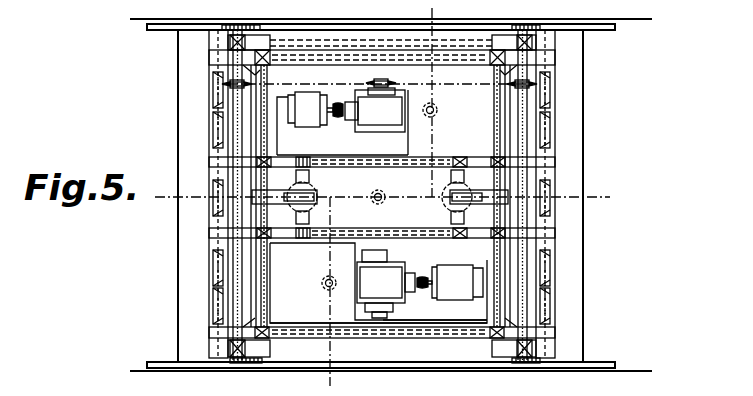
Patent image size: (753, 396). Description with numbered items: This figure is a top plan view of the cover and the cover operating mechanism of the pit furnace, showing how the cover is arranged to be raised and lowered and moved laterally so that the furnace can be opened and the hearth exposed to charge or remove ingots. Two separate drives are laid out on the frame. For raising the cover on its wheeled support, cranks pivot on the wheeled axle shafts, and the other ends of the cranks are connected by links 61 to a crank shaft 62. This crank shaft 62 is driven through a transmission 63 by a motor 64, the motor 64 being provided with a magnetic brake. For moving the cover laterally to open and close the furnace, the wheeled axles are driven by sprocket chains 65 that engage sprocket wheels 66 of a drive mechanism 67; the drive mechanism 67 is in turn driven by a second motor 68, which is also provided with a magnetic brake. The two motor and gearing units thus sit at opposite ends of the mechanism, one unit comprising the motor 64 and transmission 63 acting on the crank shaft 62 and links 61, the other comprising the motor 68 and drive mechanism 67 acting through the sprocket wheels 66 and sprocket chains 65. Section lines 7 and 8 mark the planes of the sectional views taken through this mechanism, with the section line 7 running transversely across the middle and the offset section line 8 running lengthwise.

The section line 7- 7 is at (155, 197).
The section line 8- 8 is at (432, 8).
The links 61 is at (473, 308).
The crank shaft 62 is at (393, 313).
The transmission 63 is at (397, 273).
The motor 64 is at (473, 256).
The sprocket chains 65 is at (328, 87).
The sprocket wheels 66 is at (400, 84).
The drive mechanism 67 is at (382, 117).
The motor 68 is at (311, 121).